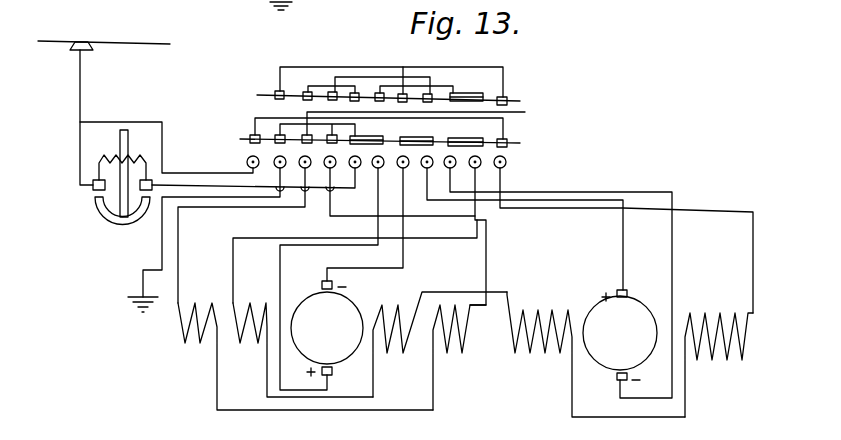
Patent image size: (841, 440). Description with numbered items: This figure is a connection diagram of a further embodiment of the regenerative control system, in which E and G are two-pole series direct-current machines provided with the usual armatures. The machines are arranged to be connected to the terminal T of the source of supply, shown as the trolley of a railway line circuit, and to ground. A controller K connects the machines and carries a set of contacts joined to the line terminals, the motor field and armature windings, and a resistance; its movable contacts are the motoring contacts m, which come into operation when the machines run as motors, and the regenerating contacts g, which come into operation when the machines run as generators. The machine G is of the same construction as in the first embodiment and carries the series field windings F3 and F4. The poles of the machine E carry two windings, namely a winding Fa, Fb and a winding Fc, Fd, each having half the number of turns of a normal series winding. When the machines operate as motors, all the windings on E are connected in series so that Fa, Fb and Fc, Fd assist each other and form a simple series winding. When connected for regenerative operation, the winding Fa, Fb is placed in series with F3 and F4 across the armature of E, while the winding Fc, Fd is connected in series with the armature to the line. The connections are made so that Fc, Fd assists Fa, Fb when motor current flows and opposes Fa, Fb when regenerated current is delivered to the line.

The trolley terminal T is at (140, 44).
The controller K is at (402, 114).
The regenerating contacts g is at (399, 95).
The motoring contacts m is at (393, 137).
The motor E is at (327, 328).
The motor G is at (620, 335).
The field winding Fc is at (305, 356).
The field winding Fa is at (303, 350).
The field winding Fb is at (440, 344).
The field winding Fd is at (459, 357).
The series field winding F3 is at (596, 354).
The series field winding F4 is at (719, 365).